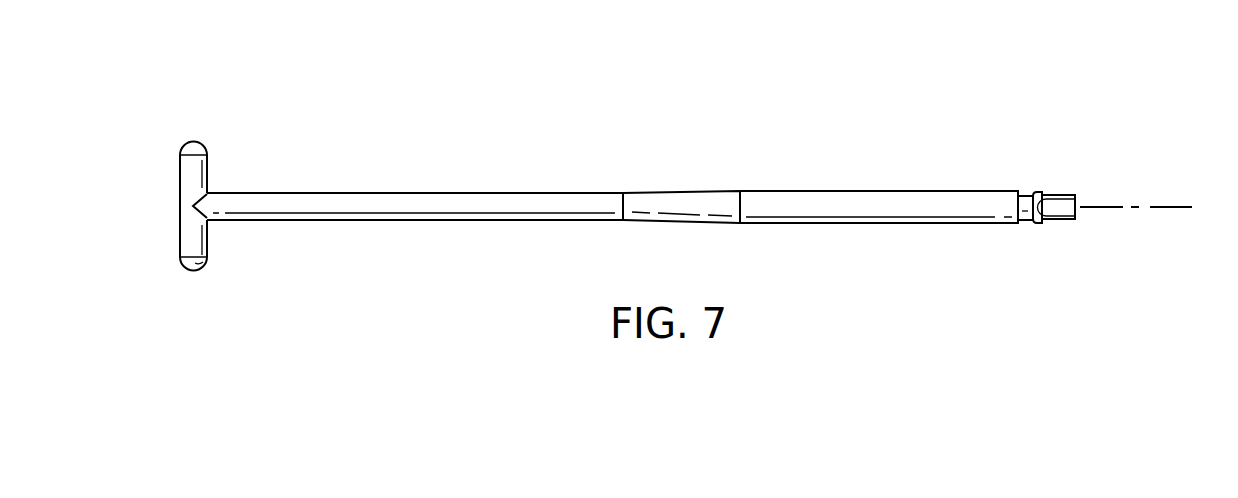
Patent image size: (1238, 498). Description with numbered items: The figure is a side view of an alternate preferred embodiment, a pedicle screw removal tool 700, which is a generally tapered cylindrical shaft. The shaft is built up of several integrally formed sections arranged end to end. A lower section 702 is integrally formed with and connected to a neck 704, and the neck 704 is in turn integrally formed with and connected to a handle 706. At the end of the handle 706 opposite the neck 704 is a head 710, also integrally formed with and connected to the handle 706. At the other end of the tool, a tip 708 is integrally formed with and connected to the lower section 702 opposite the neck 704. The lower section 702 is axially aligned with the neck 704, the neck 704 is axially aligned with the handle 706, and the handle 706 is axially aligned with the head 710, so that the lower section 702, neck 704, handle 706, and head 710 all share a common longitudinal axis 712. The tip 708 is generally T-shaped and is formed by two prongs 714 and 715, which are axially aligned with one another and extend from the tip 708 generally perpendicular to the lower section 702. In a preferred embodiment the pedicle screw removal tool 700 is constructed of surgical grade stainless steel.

The pedicle screw removal tool 700 is at (483, 92).
The lower section 702 is at (415, 192).
The neck 704 is at (682, 191).
The handle 706 is at (880, 191).
The tip 708 is at (180, 208).
The head 710 is at (1058, 191).
The longitudinal axis 712 is at (1172, 208).
The prong 714 is at (190, 168).
The prong 715 is at (190, 244).